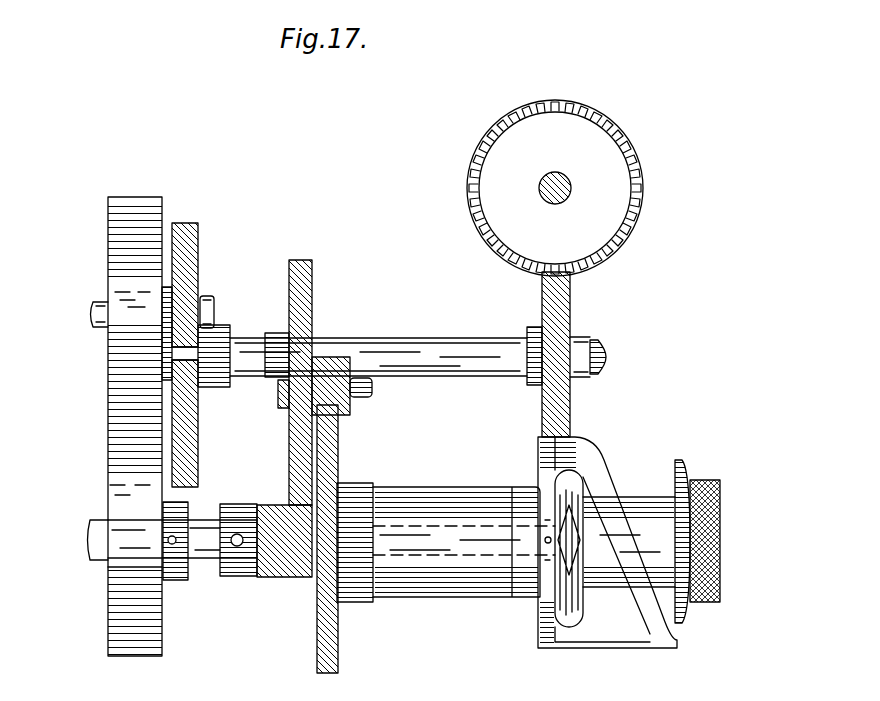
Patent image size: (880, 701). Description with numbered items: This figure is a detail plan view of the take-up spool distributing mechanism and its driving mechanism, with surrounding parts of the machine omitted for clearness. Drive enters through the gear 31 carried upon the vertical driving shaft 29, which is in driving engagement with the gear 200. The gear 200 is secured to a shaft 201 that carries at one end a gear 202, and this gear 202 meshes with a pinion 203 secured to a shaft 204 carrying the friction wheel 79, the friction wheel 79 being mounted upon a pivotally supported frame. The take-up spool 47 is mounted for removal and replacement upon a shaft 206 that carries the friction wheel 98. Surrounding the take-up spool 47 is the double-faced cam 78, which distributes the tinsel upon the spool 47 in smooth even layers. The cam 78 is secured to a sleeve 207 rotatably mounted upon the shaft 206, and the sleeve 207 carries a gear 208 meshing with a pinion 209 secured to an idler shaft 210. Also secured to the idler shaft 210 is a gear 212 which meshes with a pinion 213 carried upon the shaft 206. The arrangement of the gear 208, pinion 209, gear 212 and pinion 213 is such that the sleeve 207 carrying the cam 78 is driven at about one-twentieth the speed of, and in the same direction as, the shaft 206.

The friction wheel 79 is at (118, 262).
The friction wheel 98 is at (125, 502).
The pinion 203 is at (192, 290).
The gear 202 is at (188, 468).
The shaft 204 is at (217, 325).
The gear 212 is at (300, 290).
The pinion 213 is at (292, 578).
The pinion 209 is at (330, 370).
The idler shaft 210 is at (375, 388).
The gear 208 is at (338, 650).
The shaft 206 is at (208, 560).
The sleeve 207 is at (452, 598).
The double-faced cam 78 is at (590, 462).
The take-up spool 47 is at (640, 512).
The gear 200 is at (556, 320).
The shaft 201 is at (605, 357).
The gear 31 is at (622, 220).
The vertical driving shaft 29 is at (560, 186).